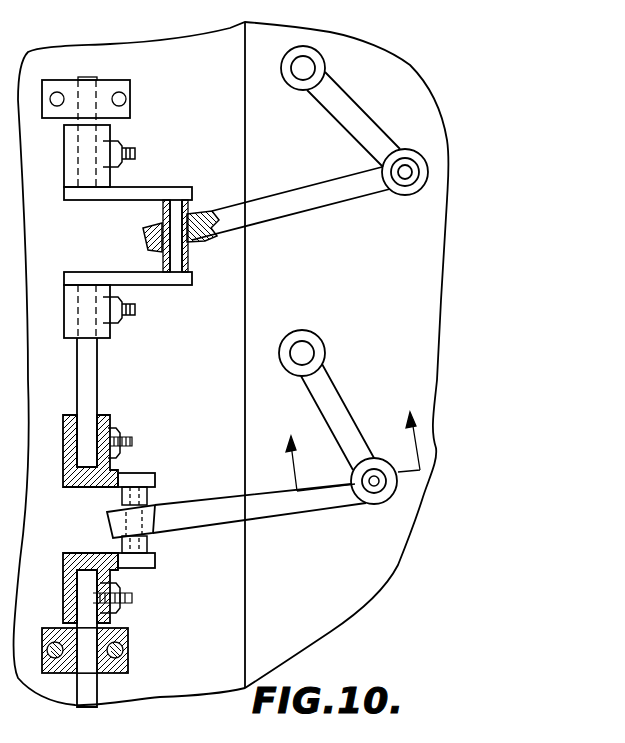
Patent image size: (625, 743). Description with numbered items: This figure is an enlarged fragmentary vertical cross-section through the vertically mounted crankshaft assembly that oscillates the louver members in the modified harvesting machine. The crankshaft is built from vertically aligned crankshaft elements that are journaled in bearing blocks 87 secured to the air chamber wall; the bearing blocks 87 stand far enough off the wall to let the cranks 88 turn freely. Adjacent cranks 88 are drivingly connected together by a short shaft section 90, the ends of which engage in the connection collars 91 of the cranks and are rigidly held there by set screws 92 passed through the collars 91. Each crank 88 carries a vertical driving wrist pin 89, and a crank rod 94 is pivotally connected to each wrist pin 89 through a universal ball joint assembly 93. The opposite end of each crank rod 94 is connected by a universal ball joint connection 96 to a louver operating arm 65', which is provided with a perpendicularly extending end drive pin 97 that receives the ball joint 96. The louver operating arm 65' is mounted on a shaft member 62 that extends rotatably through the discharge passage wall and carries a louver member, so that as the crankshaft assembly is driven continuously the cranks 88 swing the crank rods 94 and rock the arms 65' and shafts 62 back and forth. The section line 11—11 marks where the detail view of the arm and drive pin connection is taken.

The section line 11— 11 is at (353, 451).
The shaft member 62 is at (302, 354).
The louver operating arm 65' is at (353, 417).
The bearing block 87 is at (110, 80).
The crank 88 is at (190, 190).
The wrist pin 89 is at (176, 262).
The shaft section 90 is at (92, 397).
The connection collar 91 is at (70, 337).
The set screw 92 is at (131, 441).
The universal ball joint assembly 93 is at (192, 241).
The crank rod 94 is at (288, 200).
The universal ball joint connection 96 is at (382, 495).
The drive pin 97 is at (368, 494).